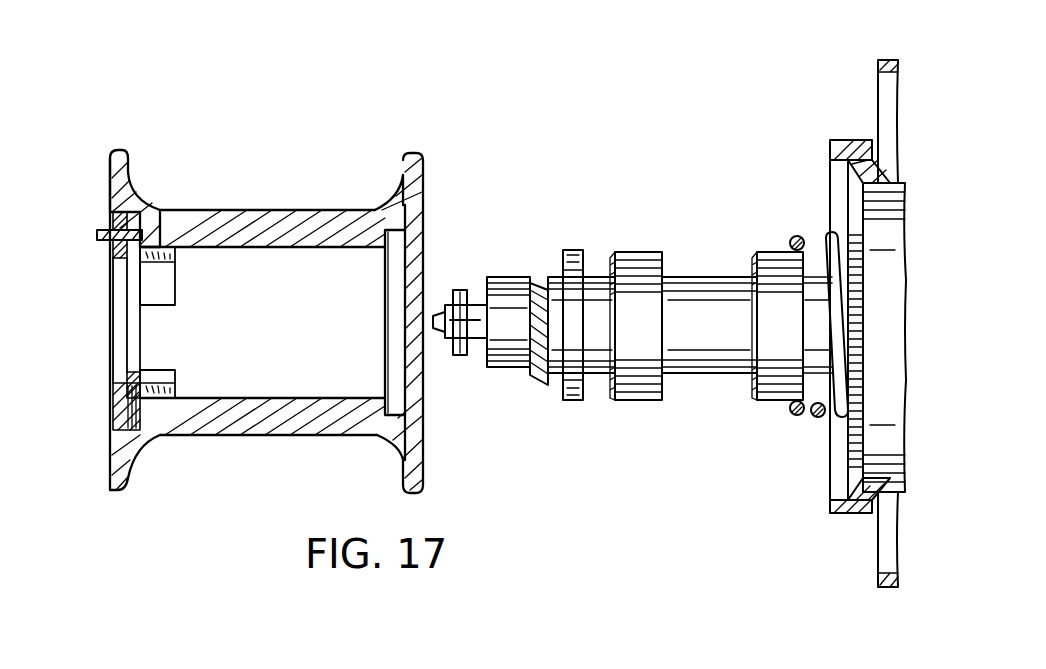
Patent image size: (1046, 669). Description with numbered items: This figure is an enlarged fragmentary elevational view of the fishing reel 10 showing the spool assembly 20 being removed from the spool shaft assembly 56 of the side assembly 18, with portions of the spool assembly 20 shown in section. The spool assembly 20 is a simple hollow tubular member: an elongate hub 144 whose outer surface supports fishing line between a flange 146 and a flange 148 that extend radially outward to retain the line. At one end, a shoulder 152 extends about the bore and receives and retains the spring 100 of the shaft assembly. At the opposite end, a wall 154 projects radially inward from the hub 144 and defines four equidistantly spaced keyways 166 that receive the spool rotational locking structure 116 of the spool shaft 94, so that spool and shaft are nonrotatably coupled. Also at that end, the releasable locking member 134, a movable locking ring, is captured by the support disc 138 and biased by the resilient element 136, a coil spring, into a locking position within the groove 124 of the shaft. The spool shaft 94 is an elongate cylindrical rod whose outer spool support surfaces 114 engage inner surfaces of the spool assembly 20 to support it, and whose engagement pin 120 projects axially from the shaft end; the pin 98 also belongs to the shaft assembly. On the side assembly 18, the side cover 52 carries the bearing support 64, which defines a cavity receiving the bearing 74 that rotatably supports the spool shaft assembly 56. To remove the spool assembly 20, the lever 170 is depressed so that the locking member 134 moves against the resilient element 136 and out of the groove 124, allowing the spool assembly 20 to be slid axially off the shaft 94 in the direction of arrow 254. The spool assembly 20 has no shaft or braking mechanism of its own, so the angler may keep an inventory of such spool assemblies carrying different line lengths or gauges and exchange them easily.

The fishing reel 10 is at (127, 137).
The flange 148 is at (134, 176).
The hub 144 is at (190, 208).
The spool assembly 20 is at (292, 205).
The flange 146 is at (398, 190).
The shoulder 152 is at (410, 240).
The lever 170 is at (95, 240).
The keyways 166 is at (172, 308).
The arrow 254 is at (270, 318).
The releasable locking member 134 is at (127, 377).
The support disc 138 is at (115, 412).
The resilient element 136 is at (122, 488).
The wall 154 is at (170, 398).
The engagement pin 120 is at (440, 312).
The pin 98 is at (460, 356).
The groove 124 is at (546, 285).
The spool rotational locking structure 116 is at (572, 250).
The outer spool support surfaces 114 is at (646, 252).
The spool shaft assembly 56 is at (708, 270).
The spool shaft 94 is at (702, 388).
The spring 100 is at (795, 416).
The side assembly 18 is at (772, 130).
The bearing support 64 is at (840, 140).
The bearing 74 is at (890, 325).
The side cover 52 is at (888, 60).